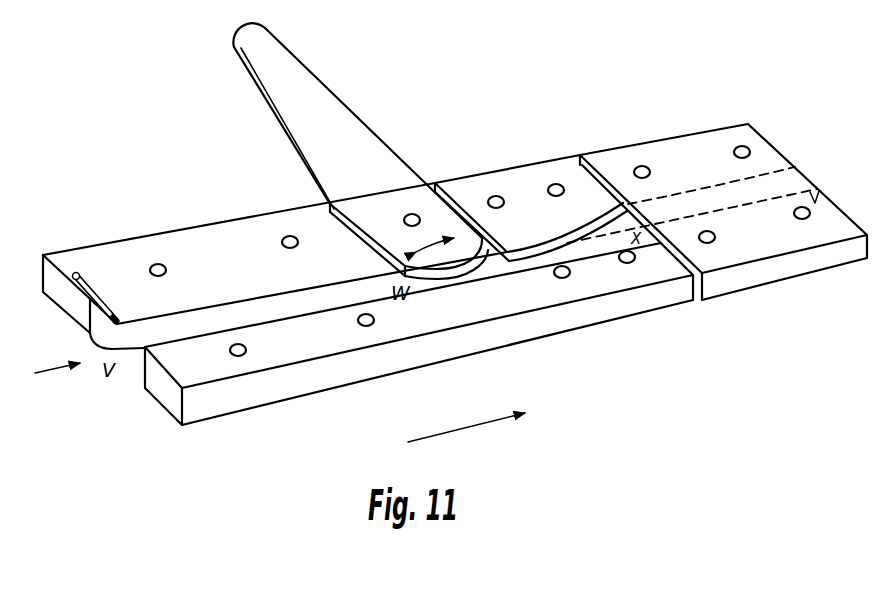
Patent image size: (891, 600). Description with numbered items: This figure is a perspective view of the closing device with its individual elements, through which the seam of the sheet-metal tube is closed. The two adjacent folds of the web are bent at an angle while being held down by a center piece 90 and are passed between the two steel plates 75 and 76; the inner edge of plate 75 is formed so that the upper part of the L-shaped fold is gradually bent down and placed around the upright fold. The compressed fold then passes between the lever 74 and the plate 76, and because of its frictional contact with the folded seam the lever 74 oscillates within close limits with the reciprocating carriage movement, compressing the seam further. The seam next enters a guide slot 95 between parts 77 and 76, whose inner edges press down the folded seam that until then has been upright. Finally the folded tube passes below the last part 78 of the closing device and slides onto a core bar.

The lever 74 is at (342, 133).
The steel plate 75 is at (183, 245).
The steel plate 76 is at (290, 387).
The part of closing device 77 is at (513, 181).
The last part of closing device 78 is at (679, 153).
The center piece 90 is at (80, 272).
The guide slot 95 is at (517, 252).